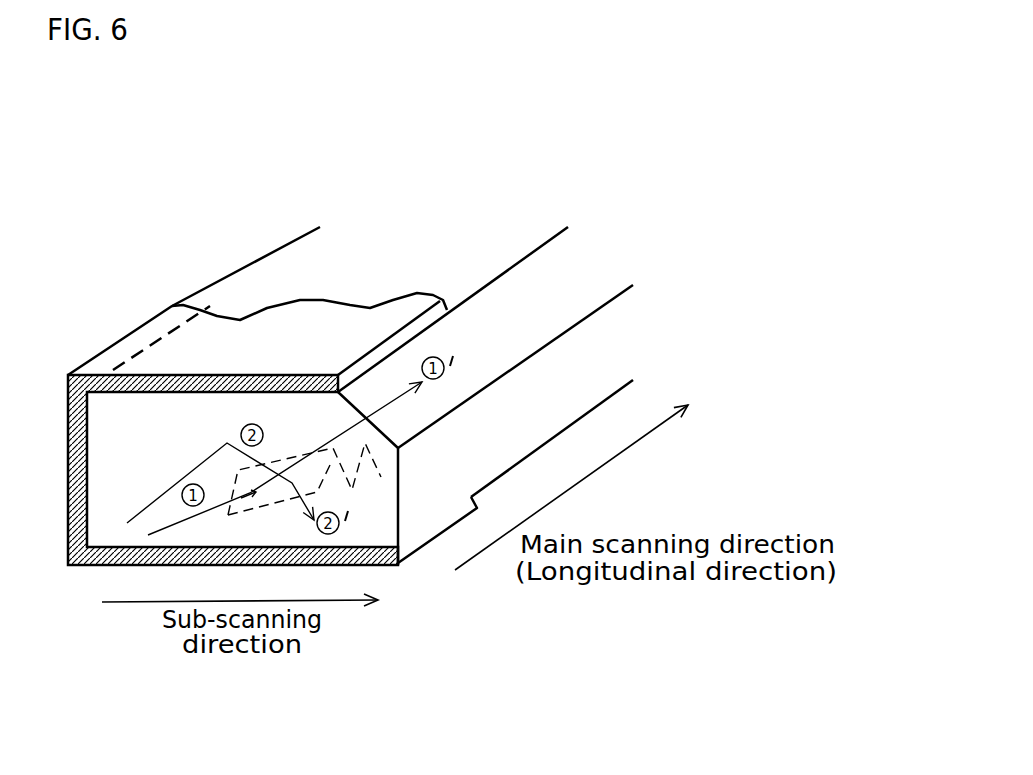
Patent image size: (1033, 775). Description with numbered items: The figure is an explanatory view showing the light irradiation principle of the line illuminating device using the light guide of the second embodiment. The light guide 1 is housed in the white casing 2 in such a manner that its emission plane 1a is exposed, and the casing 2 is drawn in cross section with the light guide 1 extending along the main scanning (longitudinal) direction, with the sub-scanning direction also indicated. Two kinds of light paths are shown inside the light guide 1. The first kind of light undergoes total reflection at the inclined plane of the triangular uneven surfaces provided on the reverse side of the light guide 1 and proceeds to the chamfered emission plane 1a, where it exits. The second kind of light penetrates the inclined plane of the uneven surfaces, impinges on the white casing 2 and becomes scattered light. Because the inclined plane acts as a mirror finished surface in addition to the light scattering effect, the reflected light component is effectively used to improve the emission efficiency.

The light guide 1 is at (554, 358).
The emission plane 1a is at (565, 287).
The white casing 2 is at (206, 345).